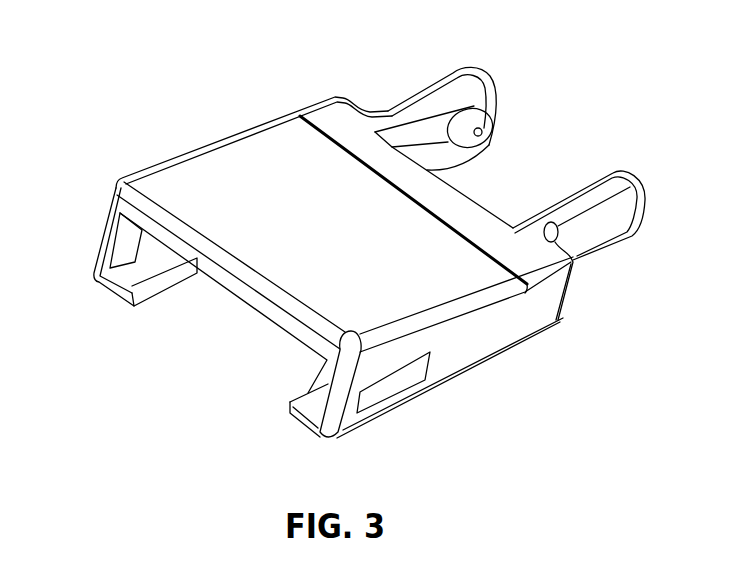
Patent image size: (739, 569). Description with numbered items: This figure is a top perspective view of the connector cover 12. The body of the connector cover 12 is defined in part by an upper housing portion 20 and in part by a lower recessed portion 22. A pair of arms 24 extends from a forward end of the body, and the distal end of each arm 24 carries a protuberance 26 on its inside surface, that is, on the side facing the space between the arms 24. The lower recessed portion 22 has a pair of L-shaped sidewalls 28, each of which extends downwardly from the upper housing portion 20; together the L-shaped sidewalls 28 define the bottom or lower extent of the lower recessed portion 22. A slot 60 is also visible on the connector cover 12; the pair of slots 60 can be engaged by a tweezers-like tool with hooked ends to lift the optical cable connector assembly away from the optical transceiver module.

The connector cover 12 is at (181, 116).
The upper housing portion 20 is at (258, 163).
The lower recessed portion 22 is at (240, 300).
The arm 24 is at (482, 68).
The protuberance 26 is at (486, 134).
The L-shaped sidewall 28 is at (103, 232).
The slot 60 is at (398, 378).